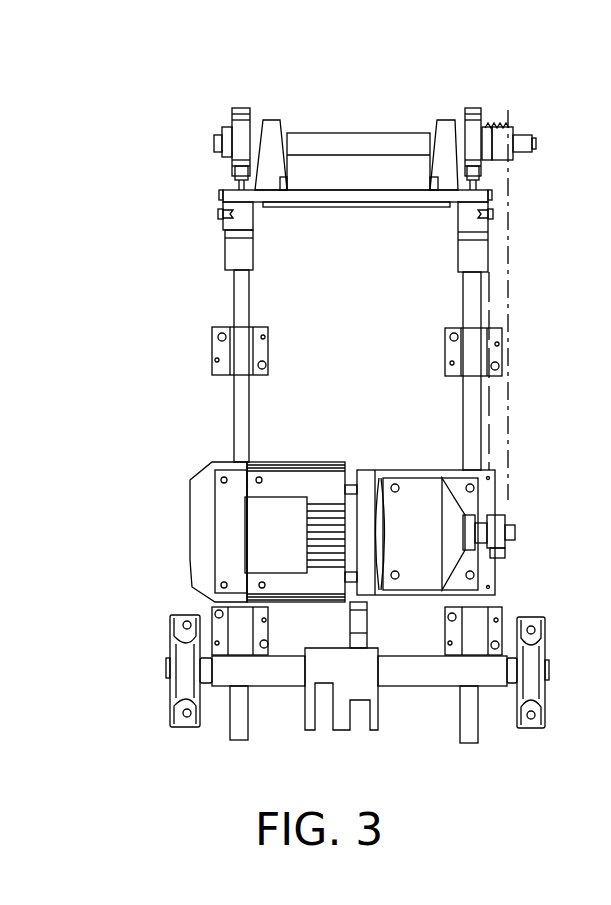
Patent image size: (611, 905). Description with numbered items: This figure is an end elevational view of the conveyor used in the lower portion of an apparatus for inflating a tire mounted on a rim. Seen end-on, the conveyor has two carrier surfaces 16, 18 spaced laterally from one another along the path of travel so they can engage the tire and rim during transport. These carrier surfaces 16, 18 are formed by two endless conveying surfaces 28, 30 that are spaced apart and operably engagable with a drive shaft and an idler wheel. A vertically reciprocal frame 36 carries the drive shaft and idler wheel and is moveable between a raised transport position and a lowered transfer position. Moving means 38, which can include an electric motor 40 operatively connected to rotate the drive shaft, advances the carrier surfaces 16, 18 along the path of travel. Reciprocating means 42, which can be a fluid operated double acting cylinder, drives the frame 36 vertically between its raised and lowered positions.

The carrier surface 16 is at (232, 106).
The carrier surface 18 is at (483, 106).
The endless conveying surface 28 is at (235, 120).
The endless conveying surface 30 is at (483, 126).
The vertically reciprocal frame 36 is at (256, 399).
The moving means 38 is at (280, 460).
The electric motor 40 is at (325, 478).
The reciprocating means 42 is at (384, 712).